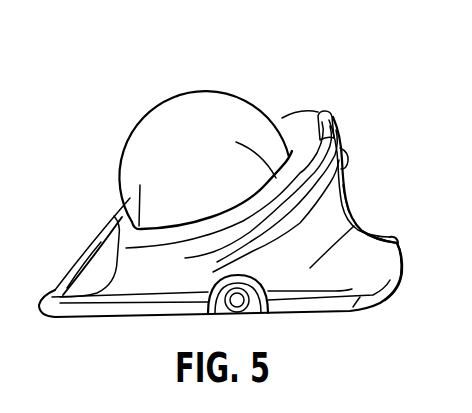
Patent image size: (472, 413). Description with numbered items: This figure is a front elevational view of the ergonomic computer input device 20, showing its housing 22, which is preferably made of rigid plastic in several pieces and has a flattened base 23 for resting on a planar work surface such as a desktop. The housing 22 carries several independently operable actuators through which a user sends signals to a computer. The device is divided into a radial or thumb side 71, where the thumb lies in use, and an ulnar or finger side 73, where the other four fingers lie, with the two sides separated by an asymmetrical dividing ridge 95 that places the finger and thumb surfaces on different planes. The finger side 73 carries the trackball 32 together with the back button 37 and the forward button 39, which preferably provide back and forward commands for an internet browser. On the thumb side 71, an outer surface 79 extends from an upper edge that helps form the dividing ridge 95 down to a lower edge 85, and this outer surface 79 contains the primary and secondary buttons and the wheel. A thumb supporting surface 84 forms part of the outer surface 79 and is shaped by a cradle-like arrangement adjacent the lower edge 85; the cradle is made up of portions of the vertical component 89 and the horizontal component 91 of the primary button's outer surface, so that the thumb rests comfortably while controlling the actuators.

The computer input device 20 is at (177, 100).
The housing 22 is at (287, 129).
The base 23 is at (120, 318).
The trackball 32 is at (170, 153).
The back button 37 is at (92, 243).
The forward button 39 is at (40, 313).
The thumb side 71 is at (345, 139).
The finger side 73 is at (127, 205).
The outer surface 79 is at (349, 187).
The thumb supporting surface 84 is at (380, 231).
The lower edge 85 is at (404, 238).
The vertical component 89 is at (353, 187).
The horizontal component 91 is at (388, 231).
The dividing ridge 95 is at (326, 115).